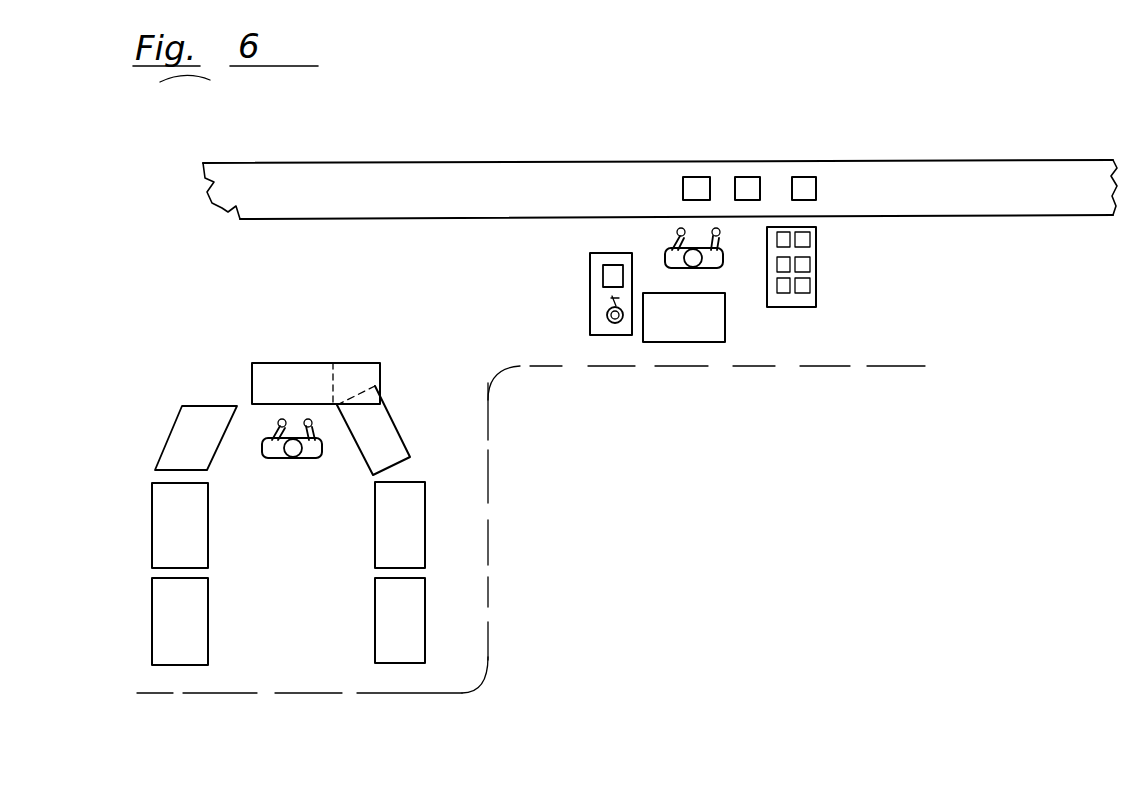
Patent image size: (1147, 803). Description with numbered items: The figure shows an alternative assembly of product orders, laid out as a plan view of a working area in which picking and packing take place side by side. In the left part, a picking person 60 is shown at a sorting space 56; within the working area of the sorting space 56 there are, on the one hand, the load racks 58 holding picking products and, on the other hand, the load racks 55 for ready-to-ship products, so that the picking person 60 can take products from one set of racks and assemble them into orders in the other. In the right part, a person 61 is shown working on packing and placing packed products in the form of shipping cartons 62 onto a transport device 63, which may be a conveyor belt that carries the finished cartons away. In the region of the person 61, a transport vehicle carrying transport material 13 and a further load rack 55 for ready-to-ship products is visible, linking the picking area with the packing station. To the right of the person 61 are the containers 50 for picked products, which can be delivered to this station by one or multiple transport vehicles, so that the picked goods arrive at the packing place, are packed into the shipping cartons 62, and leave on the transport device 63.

The transport material 13 is at (603, 276).
The containers 50 is at (810, 243).
The load racks for ready-to-ship products 55 is at (660, 328).
The sorting space 56 is at (322, 382).
The load racks having picking products 58 is at (208, 530).
The picking person 60 is at (316, 452).
The person 61 is at (715, 262).
The shipping cartons 62 is at (807, 178).
The transport device 63 is at (623, 207).